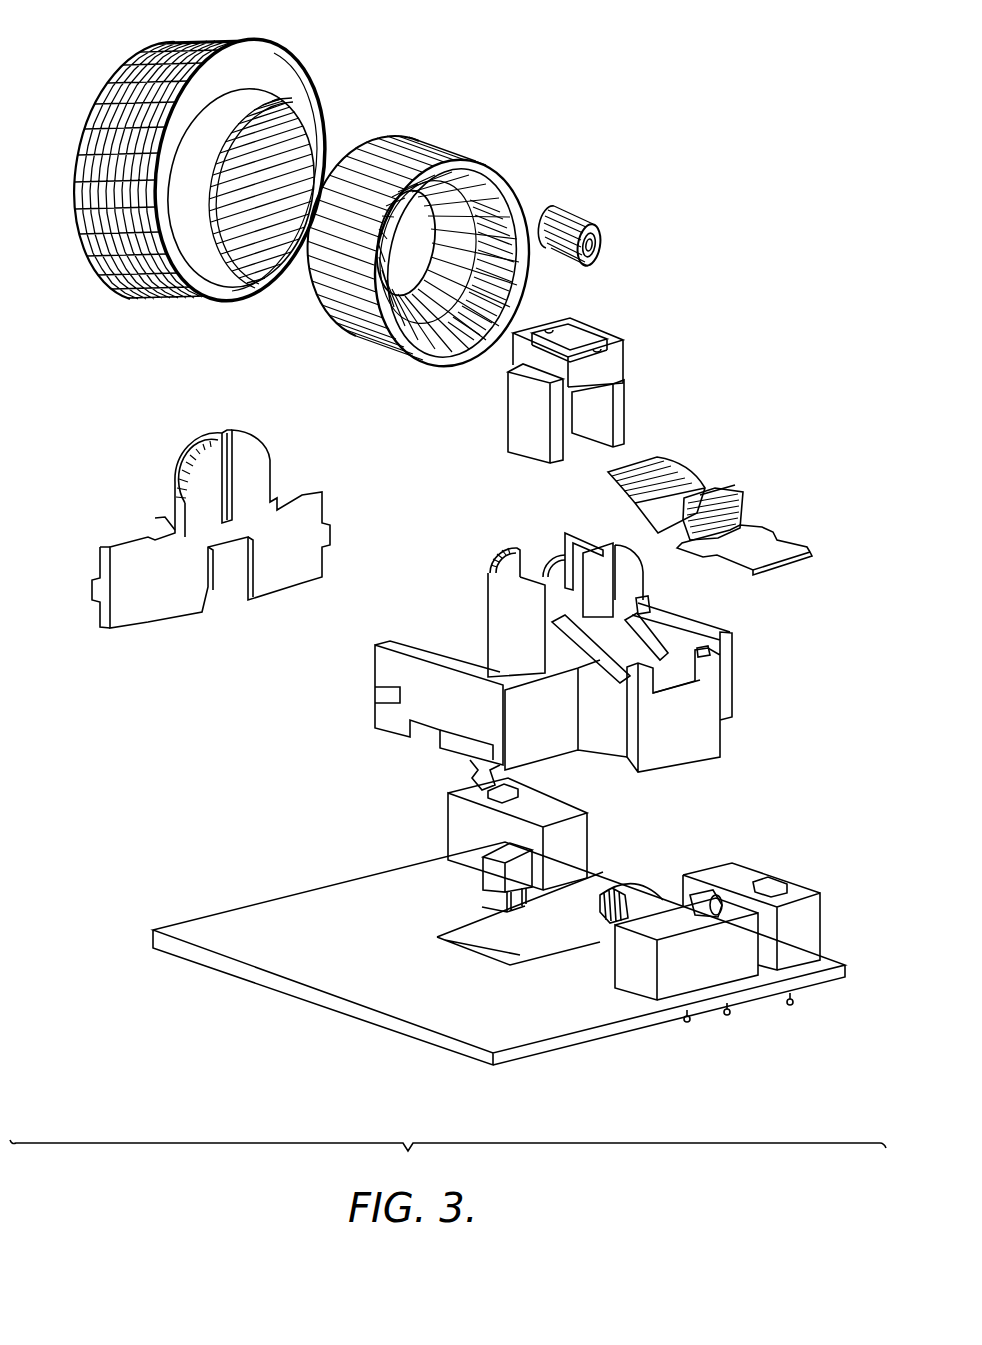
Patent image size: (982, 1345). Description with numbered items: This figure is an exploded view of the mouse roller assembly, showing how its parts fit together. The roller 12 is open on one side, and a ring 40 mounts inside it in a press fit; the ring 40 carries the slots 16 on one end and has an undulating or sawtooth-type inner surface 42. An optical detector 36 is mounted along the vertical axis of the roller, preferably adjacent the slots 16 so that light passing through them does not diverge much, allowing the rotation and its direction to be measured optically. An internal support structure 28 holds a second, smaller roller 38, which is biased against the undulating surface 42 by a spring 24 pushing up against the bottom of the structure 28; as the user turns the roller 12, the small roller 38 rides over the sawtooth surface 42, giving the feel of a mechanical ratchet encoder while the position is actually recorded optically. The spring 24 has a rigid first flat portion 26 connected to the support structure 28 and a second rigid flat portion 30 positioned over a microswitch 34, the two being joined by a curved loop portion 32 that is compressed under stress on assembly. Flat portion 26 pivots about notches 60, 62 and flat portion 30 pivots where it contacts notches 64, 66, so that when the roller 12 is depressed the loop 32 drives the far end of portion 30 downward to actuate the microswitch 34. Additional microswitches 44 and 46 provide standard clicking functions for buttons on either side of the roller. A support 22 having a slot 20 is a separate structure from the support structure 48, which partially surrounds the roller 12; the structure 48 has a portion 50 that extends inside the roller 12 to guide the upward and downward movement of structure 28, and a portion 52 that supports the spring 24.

The roller 12 is at (267, 60).
The slots 16 is at (406, 243).
The slot 20 is at (211, 501).
The support 22 is at (205, 515).
The spring 24 is at (755, 491).
The first flat portion 26 is at (673, 462).
The internal support structure 28 is at (622, 360).
The flat portion 30 is at (793, 547).
The loop portion 32 is at (748, 495).
The microswitch 34 is at (652, 975).
The optical detector 36 is at (482, 873).
The second smaller roller 38 is at (593, 228).
The ring 40 is at (426, 264).
The undulating inner surface 42 is at (448, 355).
The microswitch 44 is at (590, 825).
The microswitch 46 is at (823, 900).
The support structure 48 is at (585, 661).
The portion 50 is at (490, 597).
The portion 52 is at (688, 681).
The notch 60 is at (557, 633).
The notch 62 is at (638, 603).
The notch 64 is at (623, 693).
The notch 66 is at (698, 672).